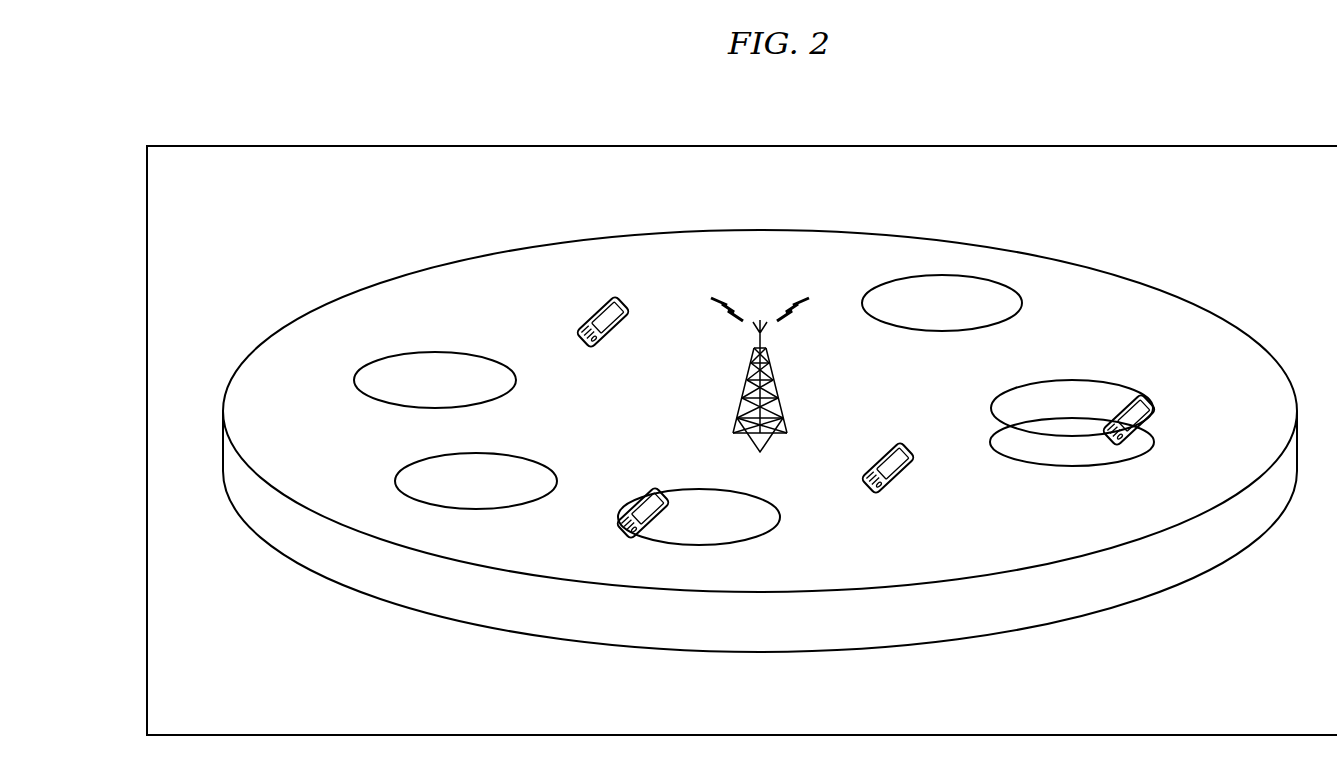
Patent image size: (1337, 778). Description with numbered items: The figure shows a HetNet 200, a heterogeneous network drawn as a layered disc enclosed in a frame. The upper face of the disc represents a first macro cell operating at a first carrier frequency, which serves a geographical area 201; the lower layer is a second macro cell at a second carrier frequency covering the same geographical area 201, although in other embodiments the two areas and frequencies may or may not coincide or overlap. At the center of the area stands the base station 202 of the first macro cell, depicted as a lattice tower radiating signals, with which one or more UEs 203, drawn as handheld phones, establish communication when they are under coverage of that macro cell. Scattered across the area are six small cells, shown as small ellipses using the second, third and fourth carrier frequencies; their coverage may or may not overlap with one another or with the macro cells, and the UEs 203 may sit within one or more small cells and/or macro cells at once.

The HetNet 200 is at (1251, 145).
The geographical area 201 is at (1084, 270).
The base station 202 is at (785, 403).
The UE 203 is at (631, 297).